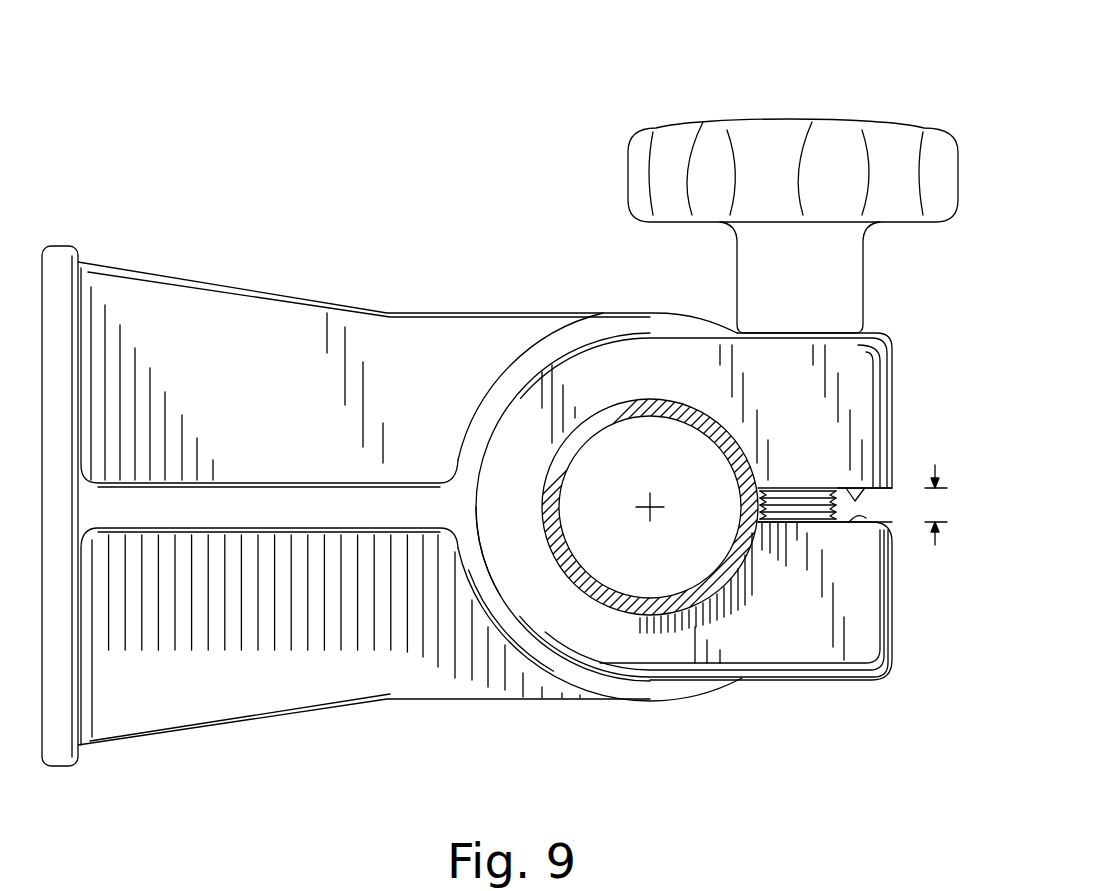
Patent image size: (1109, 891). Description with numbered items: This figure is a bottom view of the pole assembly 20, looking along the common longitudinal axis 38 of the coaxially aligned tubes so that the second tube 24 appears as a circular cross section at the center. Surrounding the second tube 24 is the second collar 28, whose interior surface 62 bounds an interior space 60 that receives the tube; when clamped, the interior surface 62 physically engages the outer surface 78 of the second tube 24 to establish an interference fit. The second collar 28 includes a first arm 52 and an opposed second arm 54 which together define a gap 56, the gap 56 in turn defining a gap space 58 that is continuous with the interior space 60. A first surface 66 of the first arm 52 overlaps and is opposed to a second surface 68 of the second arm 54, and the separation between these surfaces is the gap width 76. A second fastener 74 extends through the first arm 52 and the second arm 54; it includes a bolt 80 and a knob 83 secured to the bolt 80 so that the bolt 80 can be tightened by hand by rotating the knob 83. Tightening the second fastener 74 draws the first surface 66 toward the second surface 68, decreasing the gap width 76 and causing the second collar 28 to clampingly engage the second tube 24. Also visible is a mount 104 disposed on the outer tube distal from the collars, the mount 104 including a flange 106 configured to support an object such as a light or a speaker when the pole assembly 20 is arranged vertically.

The pole assembly 20 is at (565, 234).
The second tube 24 is at (622, 608).
The second collar 28 is at (532, 415).
The common longitudinal axis 38 is at (650, 505).
The first arm 52 is at (886, 402).
The second arm 54 is at (868, 620).
The gap 56 is at (868, 497).
The gap space 58 is at (870, 512).
The interior space 60 is at (600, 455).
The interior surface 62 is at (687, 397).
The first surface 66 is at (853, 493).
The second surface 68 is at (857, 517).
The second fastener 74 is at (781, 98).
The gap width 76 is at (935, 542).
The outer surface 78 is at (566, 590).
The bolt 80 is at (797, 515).
The knob 83 is at (835, 140).
The mount 104 is at (330, 224).
The flange 106 is at (60, 410).